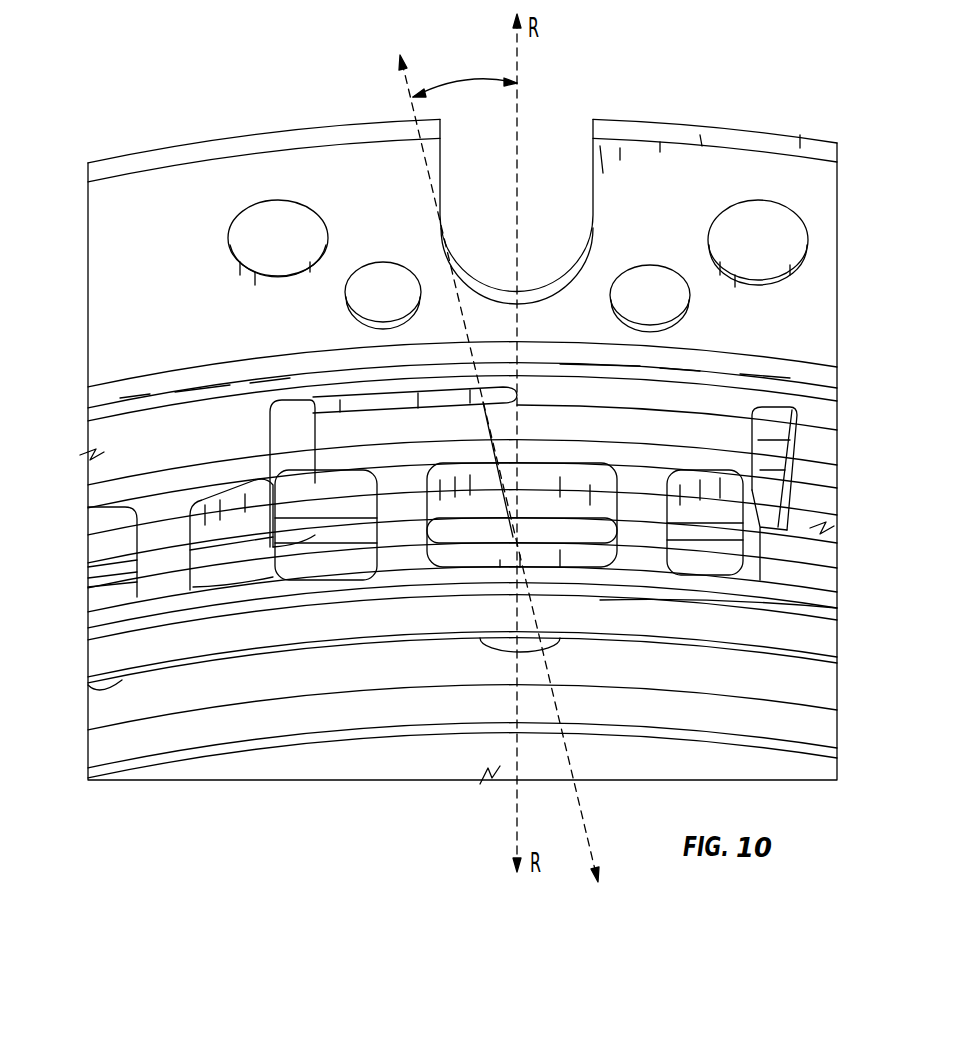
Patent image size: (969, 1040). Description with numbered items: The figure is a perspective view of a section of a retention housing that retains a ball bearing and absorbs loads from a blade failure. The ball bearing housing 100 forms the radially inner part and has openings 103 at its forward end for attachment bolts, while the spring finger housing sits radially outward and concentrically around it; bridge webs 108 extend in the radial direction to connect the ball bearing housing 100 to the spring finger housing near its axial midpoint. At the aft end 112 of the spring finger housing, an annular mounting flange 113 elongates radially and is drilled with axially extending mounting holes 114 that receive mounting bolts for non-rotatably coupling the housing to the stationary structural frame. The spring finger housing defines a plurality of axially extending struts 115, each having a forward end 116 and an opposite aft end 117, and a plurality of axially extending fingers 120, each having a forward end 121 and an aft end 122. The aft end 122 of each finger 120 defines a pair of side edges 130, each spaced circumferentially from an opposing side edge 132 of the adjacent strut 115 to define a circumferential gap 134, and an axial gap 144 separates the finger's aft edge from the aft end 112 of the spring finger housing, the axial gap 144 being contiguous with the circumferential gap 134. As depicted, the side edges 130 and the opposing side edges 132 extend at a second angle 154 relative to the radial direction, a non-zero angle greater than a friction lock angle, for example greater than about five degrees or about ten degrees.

The ball bearing housing 100 is at (205, 700).
The opening 103 is at (106, 690).
The bridge web 108 is at (818, 572).
The aft end of the spring finger housing 112 is at (780, 392).
The annular mounting flange 113 is at (800, 175).
The mounting hole 114 is at (793, 228).
The strut 115 is at (153, 541).
The forward end of the strut 116 is at (102, 620).
The aft end of the strut 117 is at (108, 473).
The finger 120 is at (390, 510).
The forward end of the finger 121 is at (402, 575).
The aft end of the finger 122 is at (342, 425).
The side edge 130 is at (785, 433).
The opposing side edge 132 is at (760, 447).
The circumferential gap 134 is at (765, 466).
The axial gap 144 is at (375, 398).
The second angle 154 is at (467, 83).